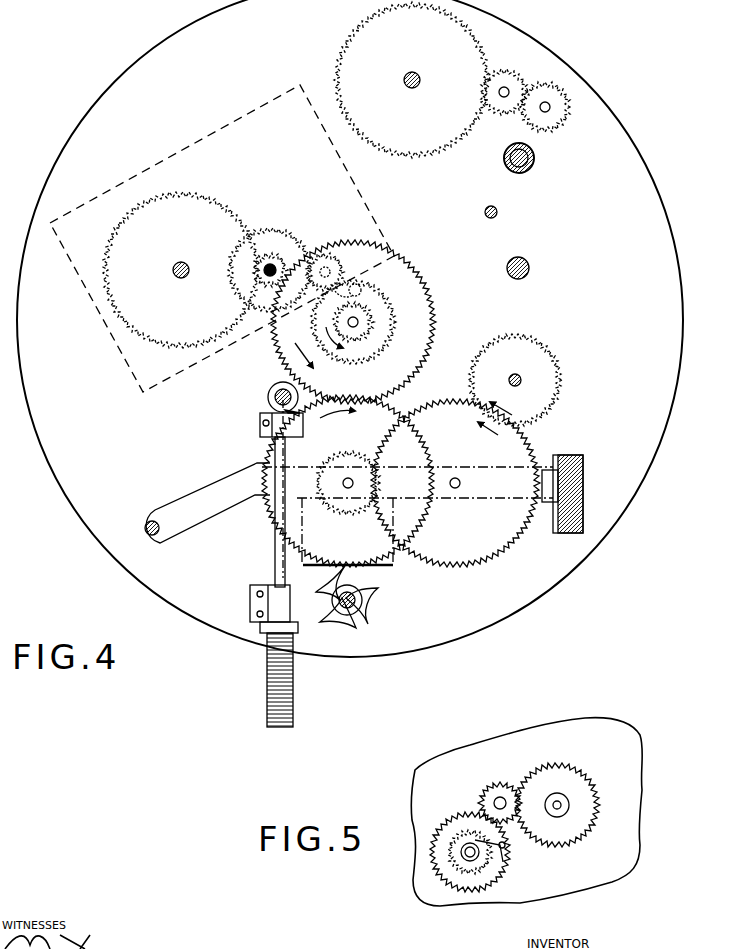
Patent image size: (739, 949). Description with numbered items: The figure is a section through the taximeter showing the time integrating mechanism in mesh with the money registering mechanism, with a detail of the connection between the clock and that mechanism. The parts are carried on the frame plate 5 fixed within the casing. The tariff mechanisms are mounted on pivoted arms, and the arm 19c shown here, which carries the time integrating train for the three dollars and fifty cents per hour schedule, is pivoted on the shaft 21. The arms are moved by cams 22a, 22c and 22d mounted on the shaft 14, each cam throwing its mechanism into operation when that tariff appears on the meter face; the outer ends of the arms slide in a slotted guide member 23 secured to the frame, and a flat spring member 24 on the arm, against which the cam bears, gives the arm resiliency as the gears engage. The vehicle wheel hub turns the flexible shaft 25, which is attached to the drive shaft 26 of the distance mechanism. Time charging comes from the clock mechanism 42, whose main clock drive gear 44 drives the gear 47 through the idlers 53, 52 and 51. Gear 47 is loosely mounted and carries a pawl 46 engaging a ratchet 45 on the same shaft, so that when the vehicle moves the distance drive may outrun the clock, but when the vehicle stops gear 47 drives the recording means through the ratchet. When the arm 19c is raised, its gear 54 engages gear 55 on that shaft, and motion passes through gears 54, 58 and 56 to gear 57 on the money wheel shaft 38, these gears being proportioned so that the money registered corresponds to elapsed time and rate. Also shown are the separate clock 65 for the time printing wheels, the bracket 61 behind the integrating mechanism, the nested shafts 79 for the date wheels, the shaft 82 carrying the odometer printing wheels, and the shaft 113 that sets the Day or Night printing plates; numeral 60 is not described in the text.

In FIG. 4, the frame plate 5 is at (350, 328).
In FIG. 5, the frame plate 5 is at (526, 812).
In FIG. 4, the clock mechanism 42 is at (222, 238).
In FIG. 4, the main clock drive gear 44 is at (205, 194).
In FIG. 4, the idler gear 52 is at (298, 244).
In FIG. 5, the idler gear 52 is at (557, 805).
In FIG. 4, the idler gear 53 is at (273, 262).
In FIG. 5, the idler gear 53 is at (569, 810).
In FIG. 4, the idler gear 51 is at (345, 256).
In FIG. 5, the idler gear 51 is at (516, 760).
In FIG. 4, the gear 47 is at (362, 307).
In FIG. 5, the gear 47 is at (465, 820).
In FIG. 4, the ratchet 45 is at (372, 330).
In FIG. 5, the ratchet 45 is at (460, 858).
In FIG. 4, the gear 55 is at (353, 332).
In FIG. 4, the clock 65 is at (412, 80).
In FIG. 4, the pinion 60 is at (507, 72).
In FIG. 4, the bracket 61 is at (545, 95).
In FIG. 4, the shafts 79 is at (538, 160).
In FIG. 4, the shaft 113 is at (499, 212).
In FIG. 4, the shaft 82 is at (531, 265).
In FIG. 4, the gear 57 is at (515, 380).
In FIG. 4, the money wheel shaft 38 is at (522, 380).
In FIG. 4, the gear 56 is at (455, 483).
In FIG. 4, the gear 54 is at (407, 481).
In FIG. 4, the gear 58 is at (348, 492).
In FIG. 4, the slotted guide member 23 is at (582, 475).
In FIG. 4, the arm 19c is at (235, 483).
In FIG. 4, the shaft 21 is at (148, 521).
In FIG. 4, the drive shaft 26 is at (272, 548).
In FIG. 4, the flat spring member 24 is at (318, 573).
In FIG. 4, the flexible shaft 25 is at (296, 676).
In FIG. 4, the cam 22c is at (374, 606).
In FIG. 4, the shaft 14 is at (376, 600).
In FIG. 4, the cam 22a is at (367, 620).
In FIG. 4, the cam 22d is at (334, 612).
In FIG. 5, the pawl 46 is at (512, 857).